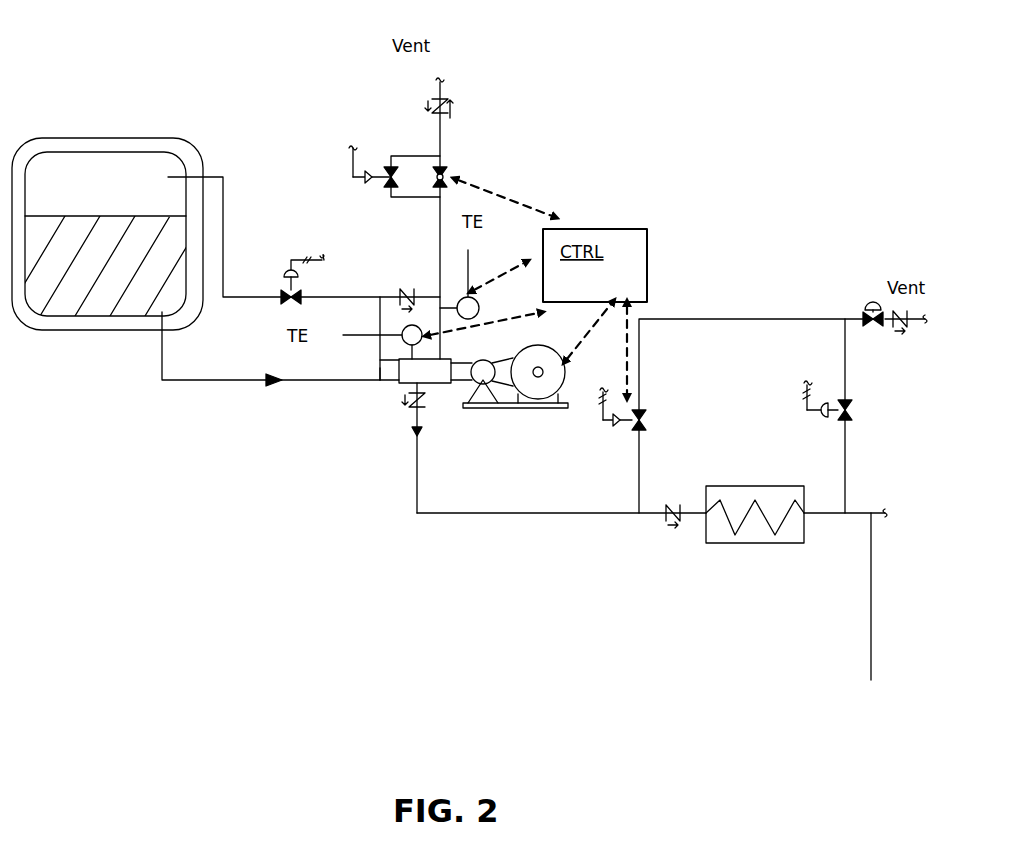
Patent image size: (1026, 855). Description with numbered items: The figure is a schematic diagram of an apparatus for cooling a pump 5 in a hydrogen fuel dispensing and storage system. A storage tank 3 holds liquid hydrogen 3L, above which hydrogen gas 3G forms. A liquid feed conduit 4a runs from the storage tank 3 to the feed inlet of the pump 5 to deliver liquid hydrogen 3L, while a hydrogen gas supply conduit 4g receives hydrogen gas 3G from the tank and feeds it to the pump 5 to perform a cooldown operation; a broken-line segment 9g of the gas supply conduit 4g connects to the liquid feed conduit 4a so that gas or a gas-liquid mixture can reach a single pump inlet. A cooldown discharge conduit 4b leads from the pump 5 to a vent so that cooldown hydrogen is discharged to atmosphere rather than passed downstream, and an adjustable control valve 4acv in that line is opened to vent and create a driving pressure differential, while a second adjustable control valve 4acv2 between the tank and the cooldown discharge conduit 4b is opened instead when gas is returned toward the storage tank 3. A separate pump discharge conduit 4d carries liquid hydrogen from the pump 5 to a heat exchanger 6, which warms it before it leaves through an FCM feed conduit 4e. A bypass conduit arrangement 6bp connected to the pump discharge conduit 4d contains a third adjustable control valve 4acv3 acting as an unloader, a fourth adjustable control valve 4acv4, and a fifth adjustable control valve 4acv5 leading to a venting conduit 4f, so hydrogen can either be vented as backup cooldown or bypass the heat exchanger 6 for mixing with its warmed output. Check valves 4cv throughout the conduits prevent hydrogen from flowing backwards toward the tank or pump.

The storage tank 3 is at (147, 133).
The hydrogen gas 3G is at (80, 188).
The liquid hydrogen 3L is at (60, 300).
The liquid feed conduit 4a is at (227, 380).
The cooldown discharge conduit 4b is at (443, 352).
The pump discharge conduit 4d is at (470, 517).
The FCM feed conduit 4e is at (867, 608).
The venting conduit 4f is at (920, 325).
The hydrogen gas supply conduit 4g is at (378, 317).
The segment 9g is at (377, 373).
The check valve 4cv is at (425, 112).
The control valve 4acv is at (289, 268).
The second adjustable control valve 4acv2 is at (284, 268).
The third adjustable control valve 4acv3 is at (616, 412).
The fourth adjustable control valve 4acv4 is at (848, 413).
The fifth adjustable control valve 4acv5 is at (870, 298).
The pump 5 is at (507, 418).
The heat exchanger 6 is at (742, 552).
The bypass conduit arrangement 6bp is at (784, 320).